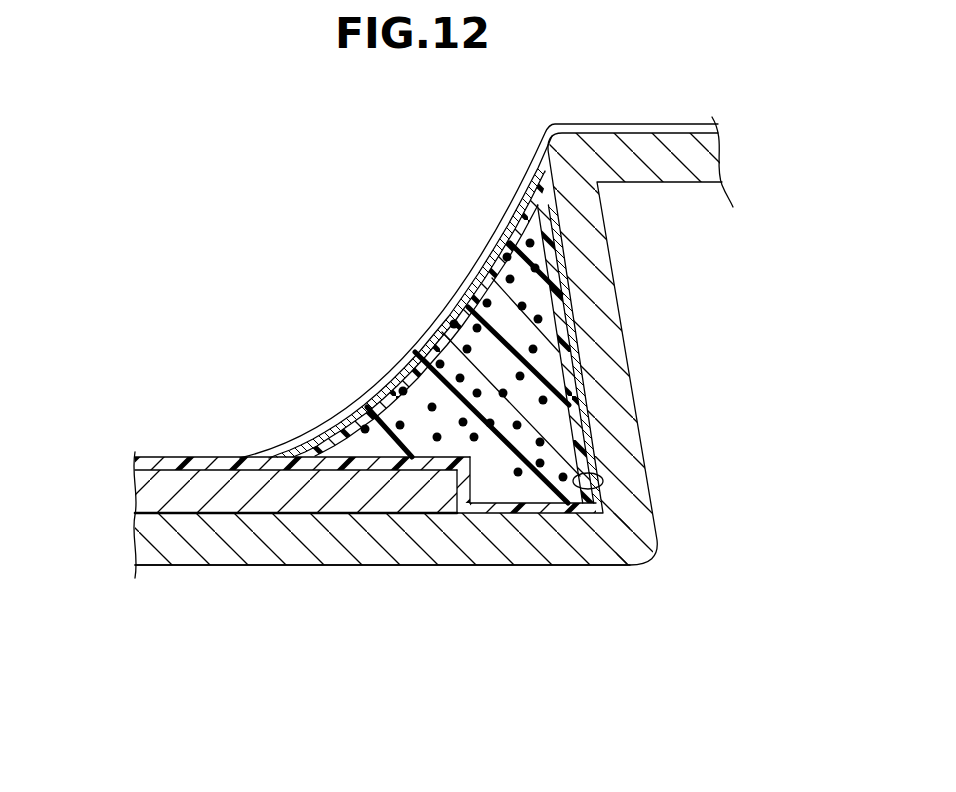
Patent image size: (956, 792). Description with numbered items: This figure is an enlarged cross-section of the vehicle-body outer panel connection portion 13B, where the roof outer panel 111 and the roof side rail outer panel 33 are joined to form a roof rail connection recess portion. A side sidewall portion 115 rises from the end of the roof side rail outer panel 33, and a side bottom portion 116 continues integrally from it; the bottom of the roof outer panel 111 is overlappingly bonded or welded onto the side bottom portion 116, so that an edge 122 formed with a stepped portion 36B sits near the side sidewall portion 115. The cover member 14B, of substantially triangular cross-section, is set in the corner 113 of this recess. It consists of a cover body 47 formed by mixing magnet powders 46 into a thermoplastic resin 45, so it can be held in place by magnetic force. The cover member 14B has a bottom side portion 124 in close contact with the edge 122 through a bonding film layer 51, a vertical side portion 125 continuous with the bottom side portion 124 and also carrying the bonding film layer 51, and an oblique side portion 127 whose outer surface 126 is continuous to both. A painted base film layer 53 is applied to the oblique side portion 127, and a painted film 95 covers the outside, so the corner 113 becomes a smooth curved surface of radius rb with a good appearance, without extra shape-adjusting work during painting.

The vehicle-body outer panel connection portion 13B is at (117, 130).
The cover member 14B is at (340, 282).
The painted film 95 is at (520, 197).
The painted base film layer 53 is at (487, 253).
The radius rb is at (437, 333).
The edge 122 is at (455, 452).
The oblique side portion 127 is at (372, 388).
The outer surface 126 is at (426, 330).
The roof outer panel 111 is at (140, 480).
The side bottom portion 116 is at (300, 567).
The bottom side portion 124 is at (420, 458).
The thermoplastic resin 45 is at (483, 490).
The magnet powders 46 is at (513, 475).
The cover body 47 is at (517, 697).
The roof side rail outer panel 33 is at (568, 567).
The vertical side portion 125 is at (570, 293).
The side sidewall portion 115 is at (625, 340).
The bonding film layer 51 is at (583, 428).
The stepped portion 36B is at (470, 467).
The corner 113 is at (603, 482).